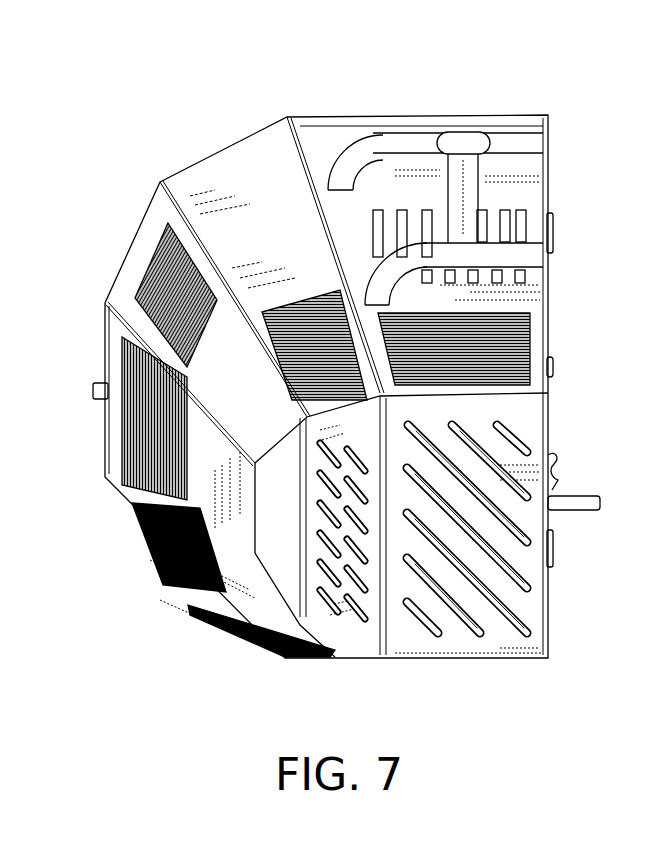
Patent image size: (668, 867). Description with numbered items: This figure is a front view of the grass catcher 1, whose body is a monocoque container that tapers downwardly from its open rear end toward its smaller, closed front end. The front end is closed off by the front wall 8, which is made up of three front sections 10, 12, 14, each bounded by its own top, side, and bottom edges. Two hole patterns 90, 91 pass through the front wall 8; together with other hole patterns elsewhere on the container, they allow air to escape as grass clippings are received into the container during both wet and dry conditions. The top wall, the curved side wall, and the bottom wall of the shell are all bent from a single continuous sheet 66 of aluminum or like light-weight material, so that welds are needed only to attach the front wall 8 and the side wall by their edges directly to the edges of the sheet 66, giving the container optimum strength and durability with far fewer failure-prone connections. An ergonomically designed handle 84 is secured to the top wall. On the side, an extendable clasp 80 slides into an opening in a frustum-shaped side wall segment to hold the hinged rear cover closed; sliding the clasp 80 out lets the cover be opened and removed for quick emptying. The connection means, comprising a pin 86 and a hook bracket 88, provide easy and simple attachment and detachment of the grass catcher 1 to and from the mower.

The grass catcher 1 is at (518, 80).
The front wall 8 is at (531, 409).
The front section 10 is at (533, 605).
The front section 12 is at (371, 636).
The front section 14 is at (283, 568).
The continuous sheet 66 is at (160, 182).
The extendable clasp 80 is at (96, 390).
The handle 84 is at (513, 136).
The pin 86 is at (577, 512).
The hook bracket 88 is at (552, 488).
The hole pattern 90 is at (512, 569).
The hole pattern 91 is at (334, 600).